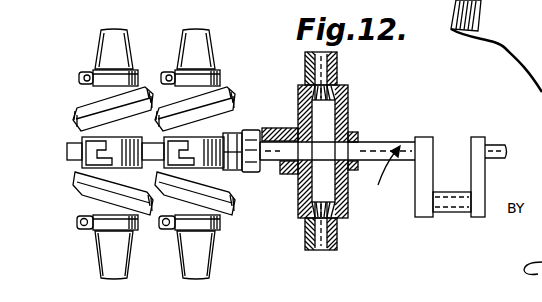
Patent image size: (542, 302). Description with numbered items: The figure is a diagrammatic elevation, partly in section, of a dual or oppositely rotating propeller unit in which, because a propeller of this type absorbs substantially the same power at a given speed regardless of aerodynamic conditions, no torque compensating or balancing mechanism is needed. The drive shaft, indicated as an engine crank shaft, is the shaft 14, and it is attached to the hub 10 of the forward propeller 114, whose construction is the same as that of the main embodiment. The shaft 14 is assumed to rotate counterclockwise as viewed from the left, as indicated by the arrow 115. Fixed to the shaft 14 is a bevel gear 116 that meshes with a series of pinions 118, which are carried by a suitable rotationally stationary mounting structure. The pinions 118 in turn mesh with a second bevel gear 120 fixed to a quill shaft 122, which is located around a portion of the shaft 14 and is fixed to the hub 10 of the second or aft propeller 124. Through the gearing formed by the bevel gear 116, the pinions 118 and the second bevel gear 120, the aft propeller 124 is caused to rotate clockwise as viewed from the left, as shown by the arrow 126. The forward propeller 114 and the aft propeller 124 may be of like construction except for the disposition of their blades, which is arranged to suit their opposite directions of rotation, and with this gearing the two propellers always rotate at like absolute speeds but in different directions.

The hub 10 is at (120, 126).
The shaft 14 is at (67, 153).
The forward propeller 114 is at (142, 94).
The aft propeller 124 is at (208, 62).
The arrow 126 is at (232, 146).
The quill shaft 122 is at (252, 172).
The second bevel gear 120 is at (298, 100).
The pinions 118 is at (338, 95).
The bevel gear 116 is at (352, 116).
The arrow 115 is at (385, 175).